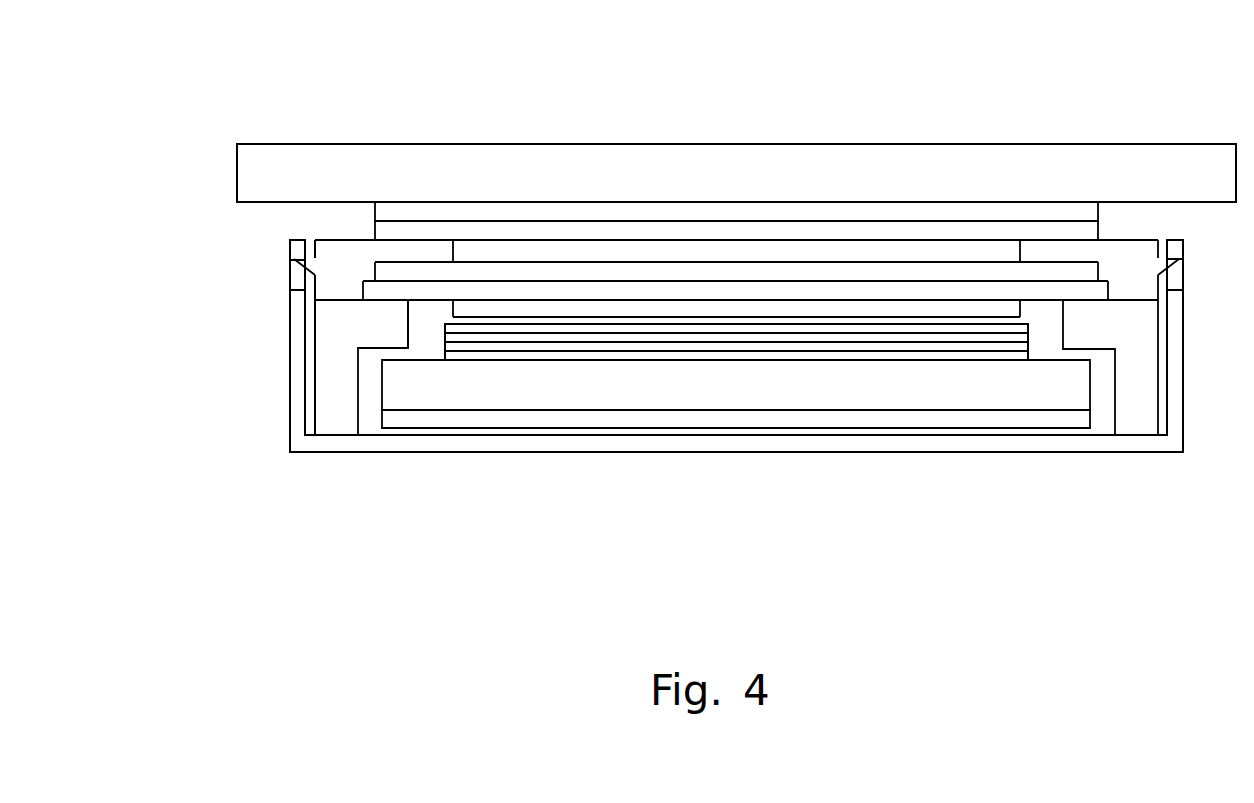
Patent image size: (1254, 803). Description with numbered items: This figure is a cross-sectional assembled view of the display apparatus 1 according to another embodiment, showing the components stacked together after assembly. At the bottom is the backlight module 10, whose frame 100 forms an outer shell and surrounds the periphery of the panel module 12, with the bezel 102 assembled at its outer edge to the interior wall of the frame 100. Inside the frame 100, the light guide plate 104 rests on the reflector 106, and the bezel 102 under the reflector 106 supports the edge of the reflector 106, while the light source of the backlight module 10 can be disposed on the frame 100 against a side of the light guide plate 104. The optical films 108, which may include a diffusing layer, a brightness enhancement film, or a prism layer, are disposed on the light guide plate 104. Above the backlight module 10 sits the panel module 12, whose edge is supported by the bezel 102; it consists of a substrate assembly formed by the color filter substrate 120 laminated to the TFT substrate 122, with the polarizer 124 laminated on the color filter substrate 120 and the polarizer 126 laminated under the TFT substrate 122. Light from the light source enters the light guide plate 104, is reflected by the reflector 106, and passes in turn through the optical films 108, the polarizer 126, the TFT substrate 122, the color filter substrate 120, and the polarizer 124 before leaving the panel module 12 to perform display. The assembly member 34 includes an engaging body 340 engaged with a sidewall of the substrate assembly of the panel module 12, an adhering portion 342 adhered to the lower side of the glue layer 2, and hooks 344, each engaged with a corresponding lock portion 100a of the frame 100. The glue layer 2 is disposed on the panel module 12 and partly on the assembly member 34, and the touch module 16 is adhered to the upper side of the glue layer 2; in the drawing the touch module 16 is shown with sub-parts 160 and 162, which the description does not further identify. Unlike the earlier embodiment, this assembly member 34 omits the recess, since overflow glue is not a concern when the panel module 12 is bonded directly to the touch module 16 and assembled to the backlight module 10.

The display apparatus 1 is at (213, 94).
The glue layer 2 is at (519, 227).
The backlight module 10 is at (525, 492).
The panel module 12 is at (910, 503).
The touch module 16 is at (1083, 75).
The cover plate 160 is at (900, 165).
The adhesive layer 162 is at (1005, 210).
The assembly member 34 is at (148, 193).
The engaging body 340 is at (323, 251).
The adhering portion 342 is at (420, 248).
The hooks 344 is at (288, 262).
The frame 100 is at (288, 415).
The lock portion 100a is at (288, 282).
The bezel 102 is at (335, 418).
The light guide plate 104 is at (1045, 390).
The reflector 106 is at (958, 420).
The optical films 108 is at (431, 343).
The color filter substrate 120 is at (835, 272).
The TFT substrate 122 is at (750, 292).
The polarizer 124 is at (665, 255).
The polarizer 126 is at (573, 307).